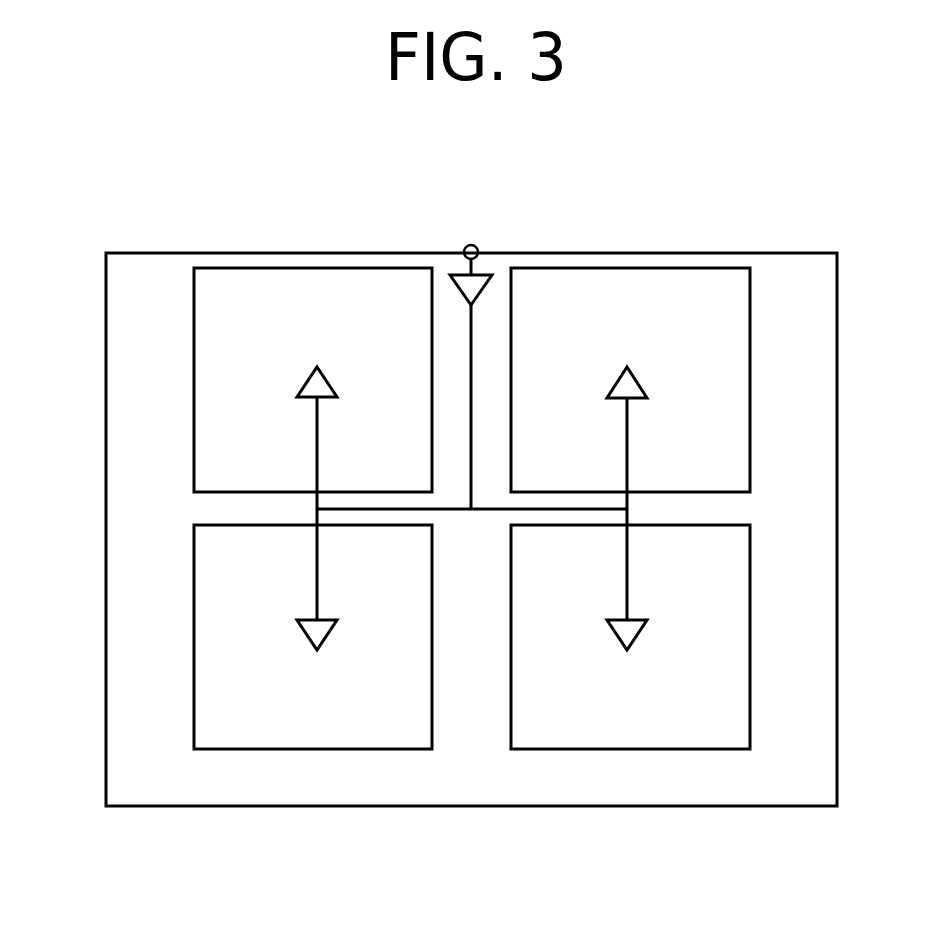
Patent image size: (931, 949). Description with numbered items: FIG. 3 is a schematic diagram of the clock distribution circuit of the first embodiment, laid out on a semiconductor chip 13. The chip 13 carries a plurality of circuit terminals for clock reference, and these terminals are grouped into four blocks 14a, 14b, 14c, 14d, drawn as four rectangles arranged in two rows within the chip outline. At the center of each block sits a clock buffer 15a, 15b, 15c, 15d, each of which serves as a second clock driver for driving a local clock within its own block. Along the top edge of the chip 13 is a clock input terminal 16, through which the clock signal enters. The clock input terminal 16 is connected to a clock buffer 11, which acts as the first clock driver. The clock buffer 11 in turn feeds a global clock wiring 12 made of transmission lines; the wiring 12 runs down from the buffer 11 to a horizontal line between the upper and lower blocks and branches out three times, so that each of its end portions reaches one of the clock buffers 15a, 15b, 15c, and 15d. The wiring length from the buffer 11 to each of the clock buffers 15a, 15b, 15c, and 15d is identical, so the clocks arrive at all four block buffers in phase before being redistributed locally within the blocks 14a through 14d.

The clock buffer 11 is at (480, 278).
The global clock wiring 12 is at (457, 510).
The semiconductor chip 13 is at (137, 702).
The block 14a is at (215, 418).
The block 14b is at (218, 678).
The block 14c is at (737, 445).
The block 14d is at (737, 703).
The clock buffer 15a is at (322, 387).
The clock buffer 15b is at (322, 628).
The clock buffer 15c is at (632, 387).
The clock buffer 15d is at (632, 628).
The clock input terminal 16 is at (468, 245).